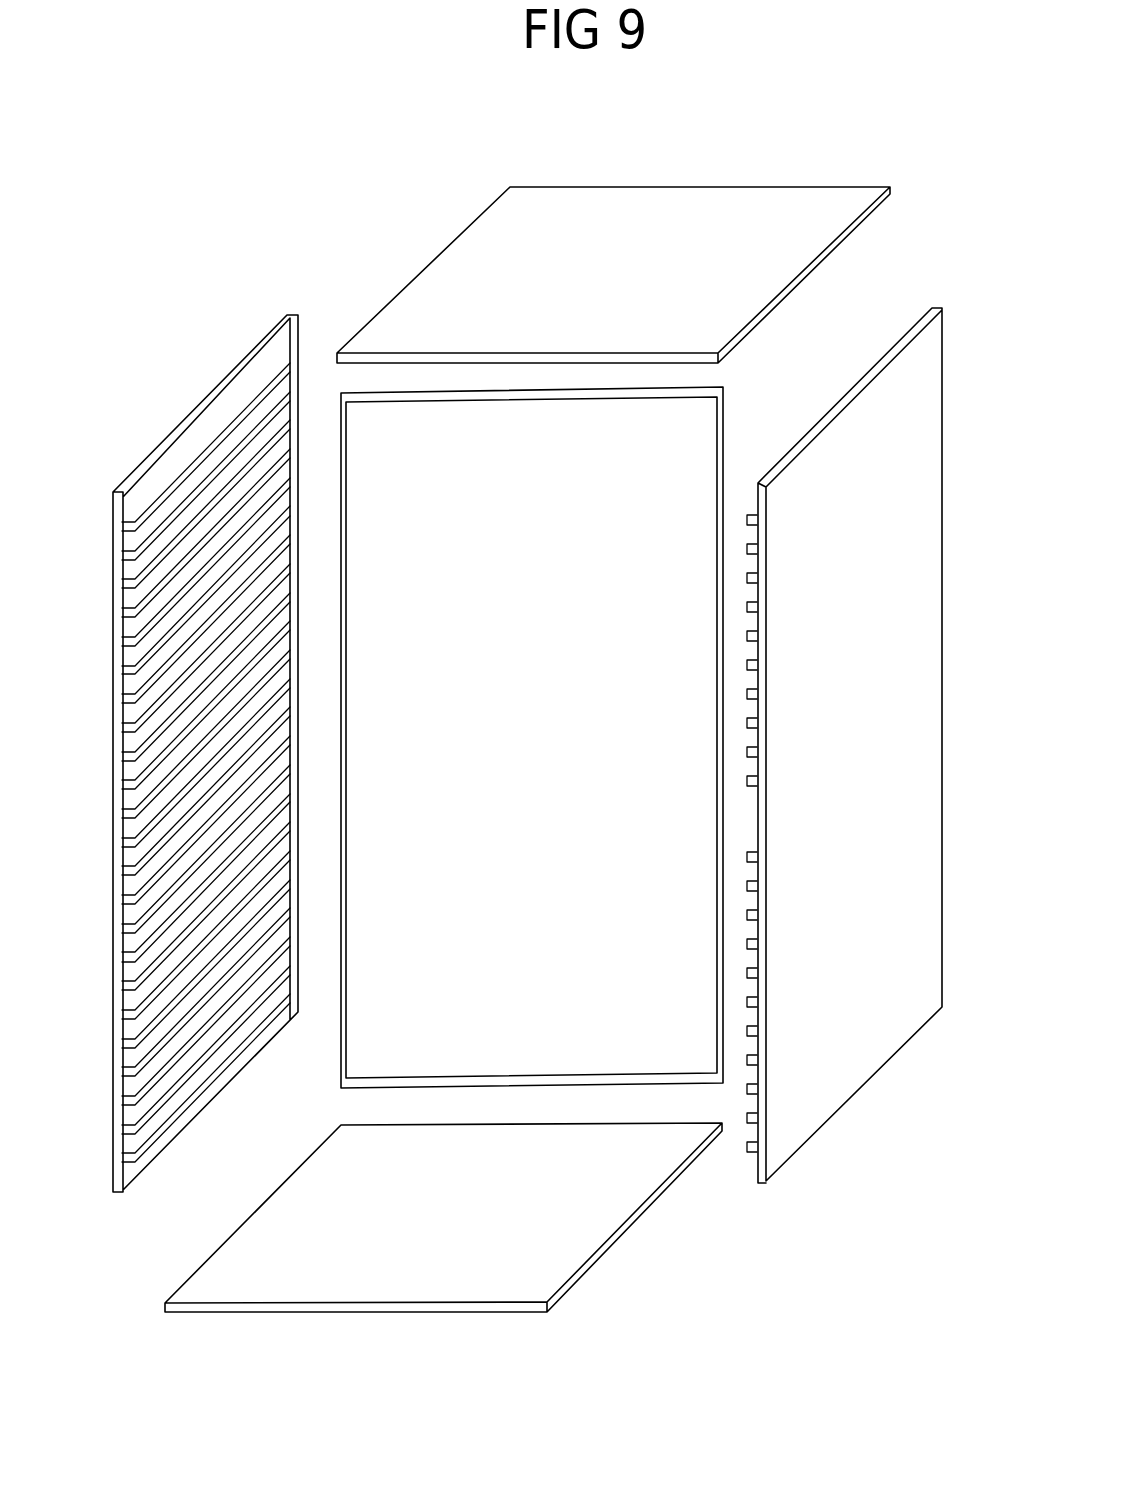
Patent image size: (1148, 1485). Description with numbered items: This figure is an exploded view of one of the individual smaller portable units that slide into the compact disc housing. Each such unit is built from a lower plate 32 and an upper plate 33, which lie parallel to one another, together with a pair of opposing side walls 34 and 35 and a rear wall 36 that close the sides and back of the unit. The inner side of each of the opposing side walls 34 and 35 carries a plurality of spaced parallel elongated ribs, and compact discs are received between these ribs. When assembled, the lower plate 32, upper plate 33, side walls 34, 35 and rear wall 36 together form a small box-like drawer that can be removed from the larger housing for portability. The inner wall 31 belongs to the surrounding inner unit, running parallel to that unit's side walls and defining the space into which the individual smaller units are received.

The inner wall 31 is at (517, 1280).
The lower plate 32 is at (530, 237).
The upper plate 33 is at (205, 753).
The opposing side wall 34 is at (845, 485).
The opposing side wall 35 is at (532, 737).
The rear wall 36 is at (160, 978).